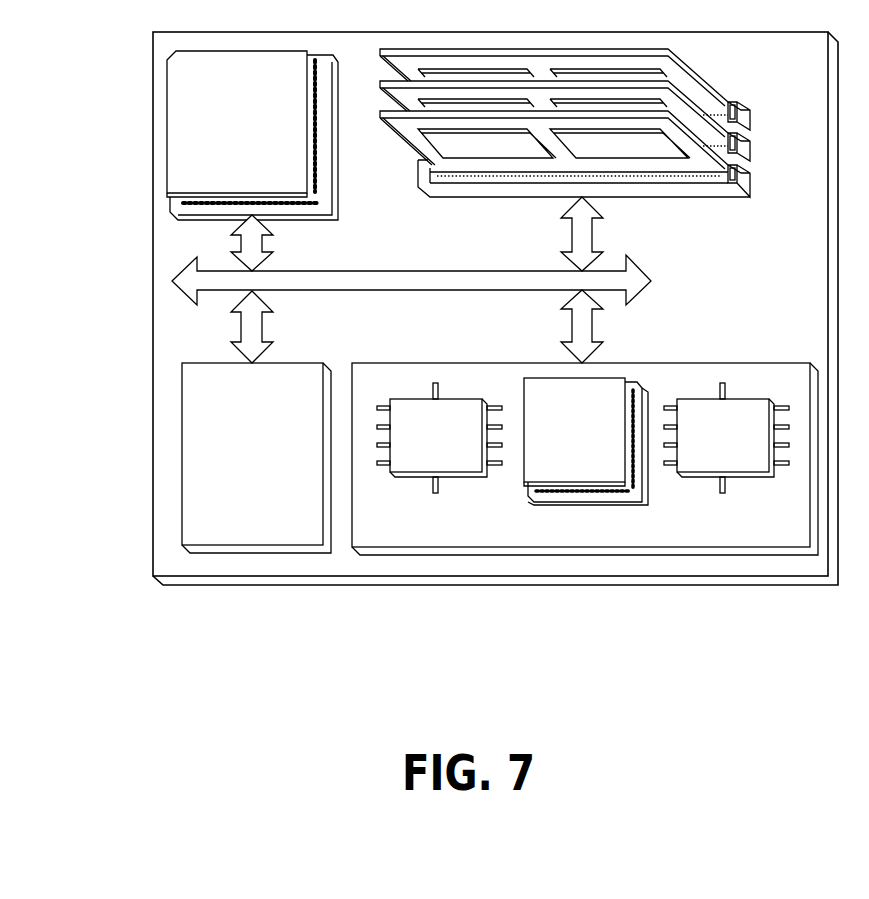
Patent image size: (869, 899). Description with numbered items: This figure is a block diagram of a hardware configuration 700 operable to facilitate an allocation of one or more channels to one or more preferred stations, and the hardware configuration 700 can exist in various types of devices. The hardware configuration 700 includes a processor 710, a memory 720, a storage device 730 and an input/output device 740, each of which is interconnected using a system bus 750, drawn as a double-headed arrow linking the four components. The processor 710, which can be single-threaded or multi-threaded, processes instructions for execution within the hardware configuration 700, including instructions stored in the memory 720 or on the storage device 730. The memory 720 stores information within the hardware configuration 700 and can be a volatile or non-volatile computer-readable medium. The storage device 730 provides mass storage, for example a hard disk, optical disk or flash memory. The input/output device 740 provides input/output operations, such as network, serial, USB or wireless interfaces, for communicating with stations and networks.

The hardware configuration 700 is at (111, 613).
The processor 710 is at (298, 185).
The memory 720 is at (715, 90).
The storage device 730 is at (311, 540).
The input/output device 740 is at (777, 362).
The system bus 750 is at (403, 291).